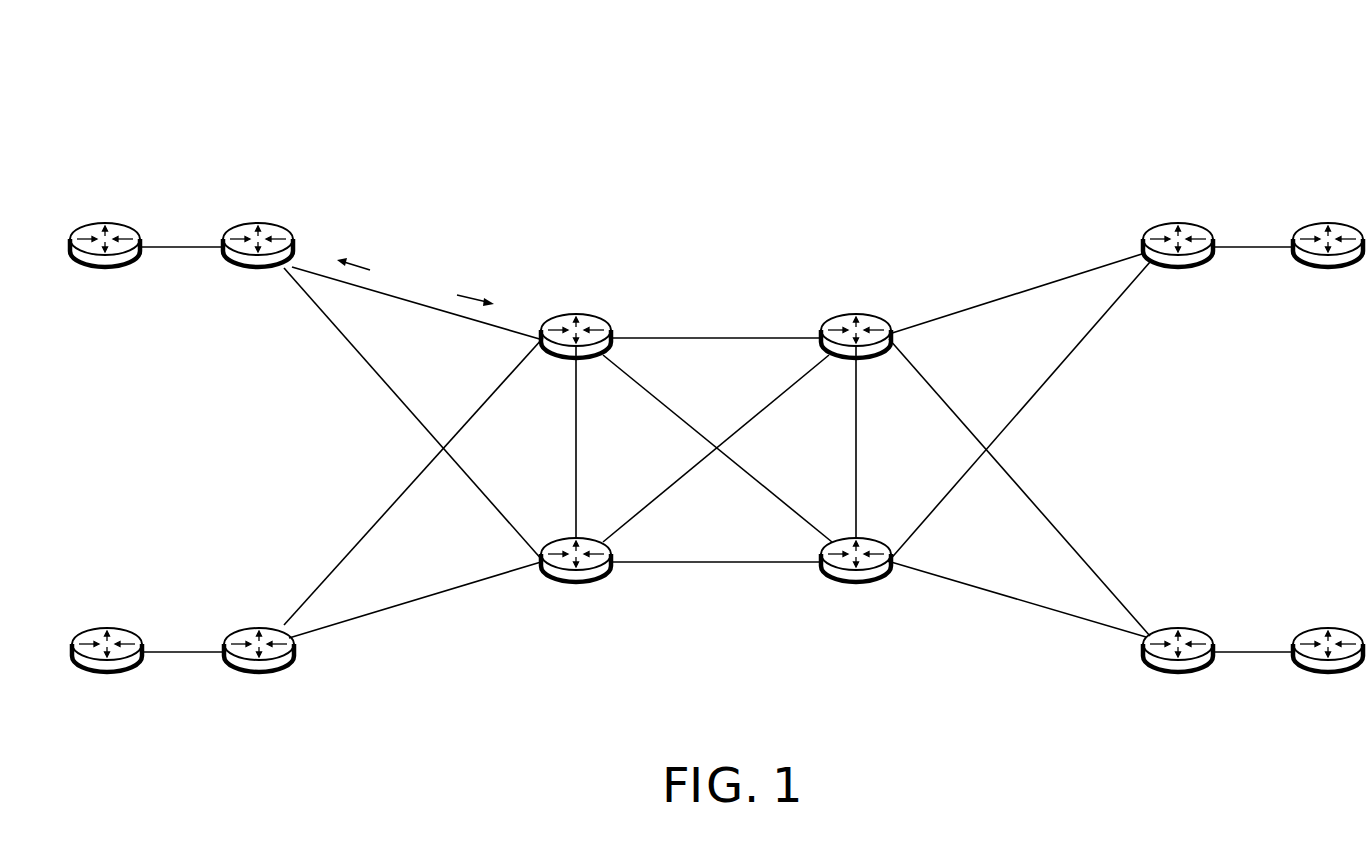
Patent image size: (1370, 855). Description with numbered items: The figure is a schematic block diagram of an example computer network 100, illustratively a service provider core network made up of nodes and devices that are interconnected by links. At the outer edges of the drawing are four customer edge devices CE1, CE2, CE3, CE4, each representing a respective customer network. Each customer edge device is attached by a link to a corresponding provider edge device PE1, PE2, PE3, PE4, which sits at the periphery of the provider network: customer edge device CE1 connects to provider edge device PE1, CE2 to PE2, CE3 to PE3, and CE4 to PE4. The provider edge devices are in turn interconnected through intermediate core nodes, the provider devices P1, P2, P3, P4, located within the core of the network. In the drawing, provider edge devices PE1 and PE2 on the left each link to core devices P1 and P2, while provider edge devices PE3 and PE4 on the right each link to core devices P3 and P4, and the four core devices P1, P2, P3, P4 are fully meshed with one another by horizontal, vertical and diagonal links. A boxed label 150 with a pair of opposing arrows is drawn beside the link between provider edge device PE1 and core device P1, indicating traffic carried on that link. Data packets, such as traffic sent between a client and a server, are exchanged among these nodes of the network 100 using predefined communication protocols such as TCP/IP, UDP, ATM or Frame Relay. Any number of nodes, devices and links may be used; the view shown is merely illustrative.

The computer network 100 is at (994, 184).
The link between PE1 and P1 150 is at (468, 236).
The customer edge device CE1 is at (107, 270).
The customer edge device CE2 is at (109, 675).
The customer edge device CE3 is at (1328, 270).
The customer edge device CE4 is at (1328, 675).
The provider edge device PE1 is at (260, 270).
The provider edge device PE2 is at (261, 675).
The provider edge device PE3 is at (1178, 270).
The provider edge device PE4 is at (1178, 675).
The provider device P1 is at (577, 314).
The provider device P2 is at (574, 585).
The provider device P3 is at (857, 314).
The provider device P4 is at (858, 585).